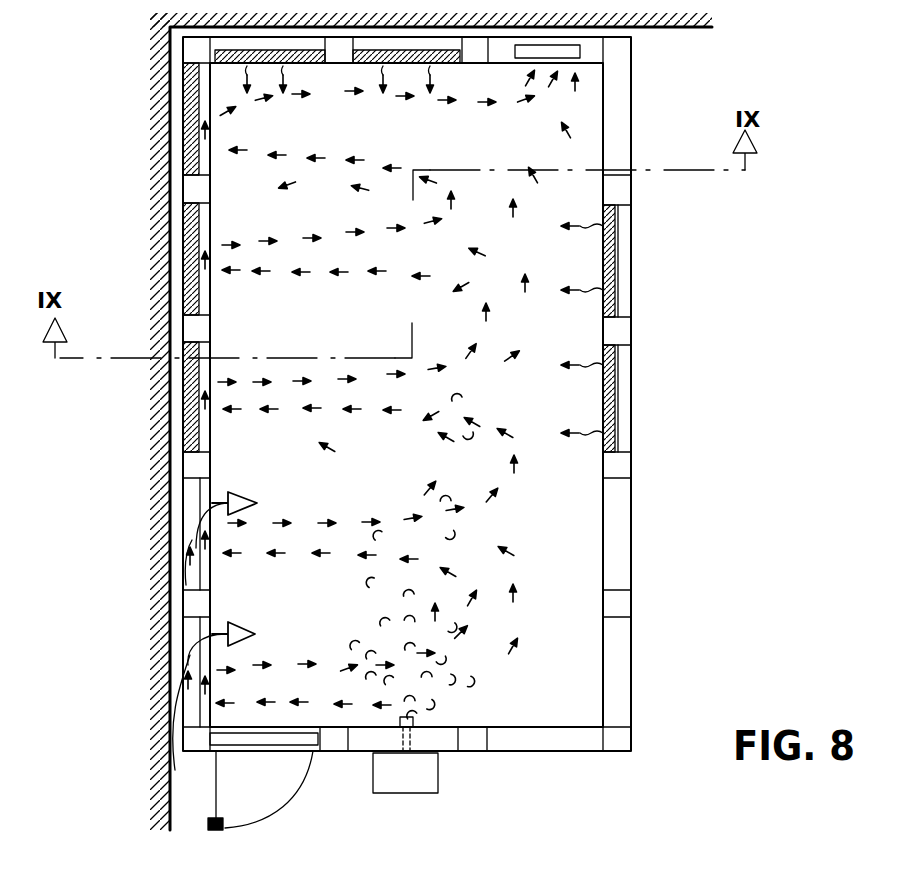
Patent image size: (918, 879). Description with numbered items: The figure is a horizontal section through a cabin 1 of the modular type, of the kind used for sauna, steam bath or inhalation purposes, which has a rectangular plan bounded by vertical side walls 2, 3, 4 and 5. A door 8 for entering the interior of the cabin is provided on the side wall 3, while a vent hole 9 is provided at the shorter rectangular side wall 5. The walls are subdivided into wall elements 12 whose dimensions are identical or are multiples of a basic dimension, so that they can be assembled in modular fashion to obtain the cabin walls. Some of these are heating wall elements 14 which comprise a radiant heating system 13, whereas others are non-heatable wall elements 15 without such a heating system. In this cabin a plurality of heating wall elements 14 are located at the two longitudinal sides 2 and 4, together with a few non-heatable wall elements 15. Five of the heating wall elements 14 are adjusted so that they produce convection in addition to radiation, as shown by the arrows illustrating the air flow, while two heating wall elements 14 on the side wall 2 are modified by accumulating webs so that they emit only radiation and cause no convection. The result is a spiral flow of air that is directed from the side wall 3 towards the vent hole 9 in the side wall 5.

The cabin 1 is at (645, 553).
The side wall 2 is at (632, 305).
The side wall 3 is at (545, 755).
The side wall 4 is at (178, 498).
The side wall 5 is at (508, 32).
The door 8 is at (307, 783).
The vent hole 9 is at (575, 52).
The wall element 12 is at (623, 390).
The radiant heating system 13 is at (623, 240).
The heating wall element 14 is at (205, 97).
The non-heatable wall element 15 is at (620, 87).